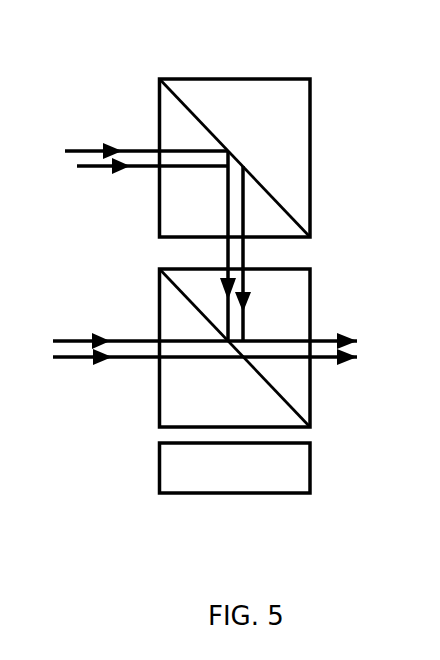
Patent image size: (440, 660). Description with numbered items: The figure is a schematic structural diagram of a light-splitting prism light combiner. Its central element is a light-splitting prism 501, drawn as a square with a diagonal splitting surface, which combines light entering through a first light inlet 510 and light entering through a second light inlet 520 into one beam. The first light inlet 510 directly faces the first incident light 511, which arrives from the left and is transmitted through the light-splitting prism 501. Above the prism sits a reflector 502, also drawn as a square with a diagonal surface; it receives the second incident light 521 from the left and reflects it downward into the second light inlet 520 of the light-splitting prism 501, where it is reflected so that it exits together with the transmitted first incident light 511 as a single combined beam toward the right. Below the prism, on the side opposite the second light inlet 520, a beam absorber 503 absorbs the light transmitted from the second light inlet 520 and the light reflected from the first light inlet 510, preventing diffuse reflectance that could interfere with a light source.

The light-splitting prism 501 is at (192, 336).
The reflector 502 is at (225, 128).
The beam absorber 503 is at (194, 456).
The first light inlet 510 is at (142, 367).
The first incident light 511 is at (190, 343).
The second light inlet 520 is at (258, 261).
The second incident light 521 is at (137, 144).